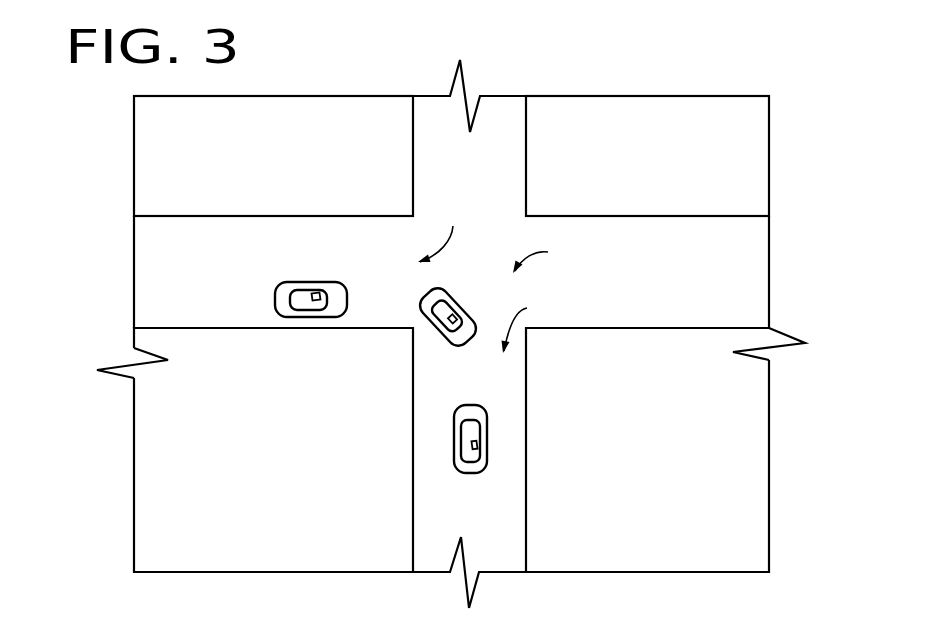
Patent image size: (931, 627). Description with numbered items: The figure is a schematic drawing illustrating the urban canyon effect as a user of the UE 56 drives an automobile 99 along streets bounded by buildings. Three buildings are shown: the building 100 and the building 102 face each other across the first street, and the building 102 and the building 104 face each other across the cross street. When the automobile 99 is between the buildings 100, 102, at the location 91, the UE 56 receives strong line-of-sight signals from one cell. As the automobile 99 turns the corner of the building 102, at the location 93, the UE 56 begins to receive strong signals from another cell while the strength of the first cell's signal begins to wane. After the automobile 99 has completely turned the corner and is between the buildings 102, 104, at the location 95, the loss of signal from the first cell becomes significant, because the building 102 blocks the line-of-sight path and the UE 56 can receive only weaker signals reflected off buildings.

The UE 56 is at (321, 297).
The location between buildings 100 and 102 91 is at (447, 231).
The location at the corner of building 102 93 is at (548, 256).
The location between buildings 102 and 104 95 is at (531, 323).
The automobile 99 is at (275, 300).
The building 100 is at (329, 183).
The building 102 is at (383, 387).
The building 104 is at (601, 382).